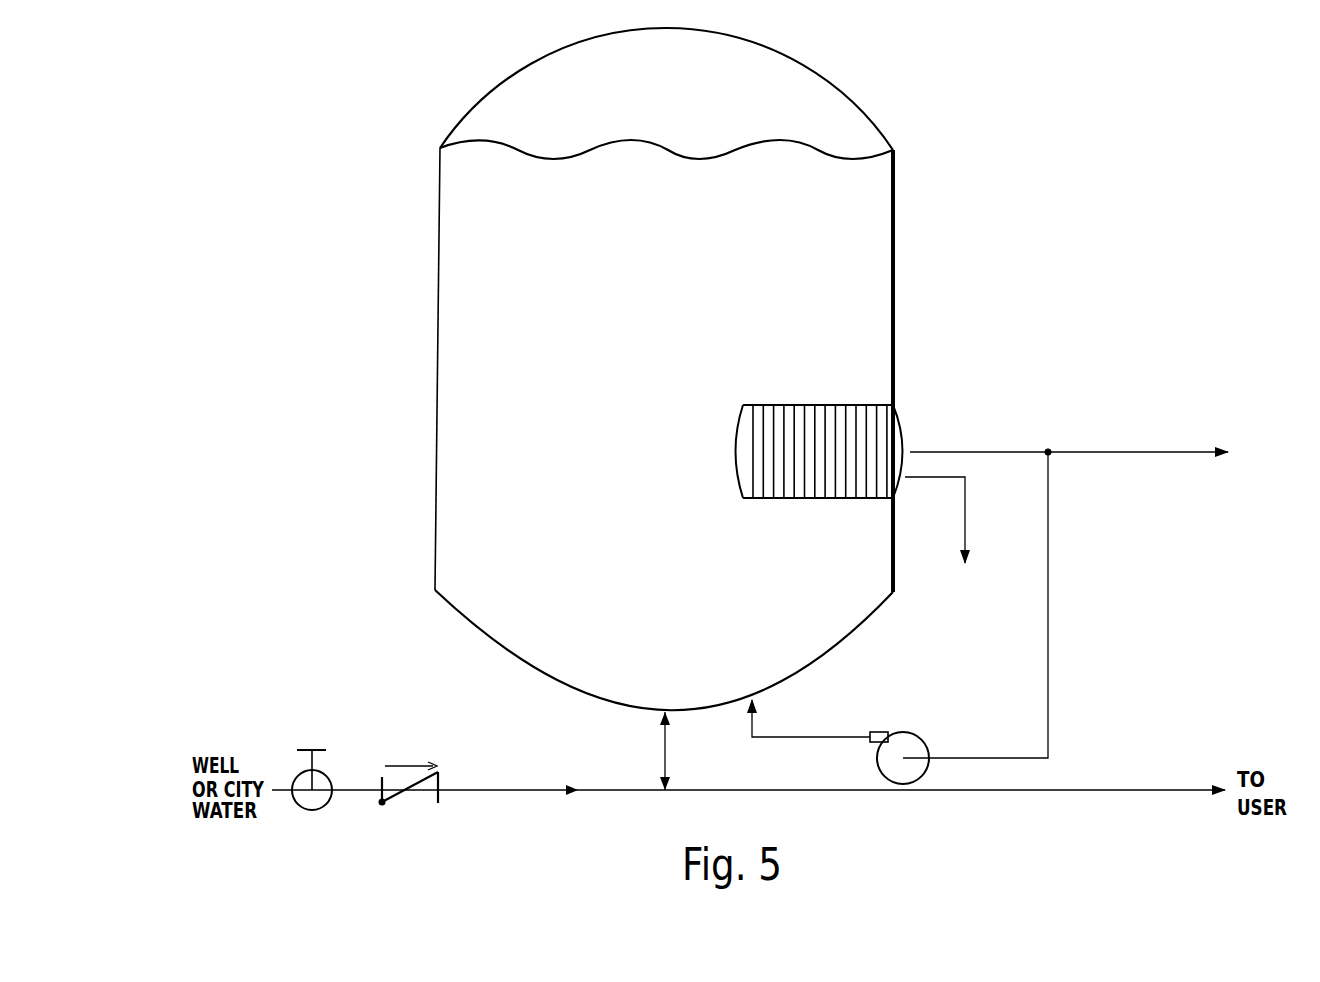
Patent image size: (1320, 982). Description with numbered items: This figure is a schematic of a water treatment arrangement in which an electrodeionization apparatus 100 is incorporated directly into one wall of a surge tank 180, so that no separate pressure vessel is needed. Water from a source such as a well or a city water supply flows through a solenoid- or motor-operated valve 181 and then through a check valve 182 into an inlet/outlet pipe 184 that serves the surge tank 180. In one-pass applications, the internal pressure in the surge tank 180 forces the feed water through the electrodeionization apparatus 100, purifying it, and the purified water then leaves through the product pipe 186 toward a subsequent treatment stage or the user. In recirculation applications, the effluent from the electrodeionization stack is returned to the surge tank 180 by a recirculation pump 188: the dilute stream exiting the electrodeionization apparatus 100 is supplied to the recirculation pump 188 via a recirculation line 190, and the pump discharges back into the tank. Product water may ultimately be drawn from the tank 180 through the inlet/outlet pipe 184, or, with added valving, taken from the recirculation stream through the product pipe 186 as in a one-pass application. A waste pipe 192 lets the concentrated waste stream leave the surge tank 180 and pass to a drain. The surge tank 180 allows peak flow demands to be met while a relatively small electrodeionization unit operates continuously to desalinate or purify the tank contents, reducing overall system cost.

The electrodeionization apparatus 100 is at (787, 404).
The surge tank 180 is at (897, 238).
The solenoid- or motor-operated valve 181 is at (317, 751).
The check valve 182 is at (443, 781).
The inlet/outlet pipe 184 is at (668, 748).
The product pipe 186 is at (1133, 454).
The recirculation pump 188 is at (918, 737).
The recirculation line 190 is at (1048, 668).
The waste pipe 192 is at (965, 536).